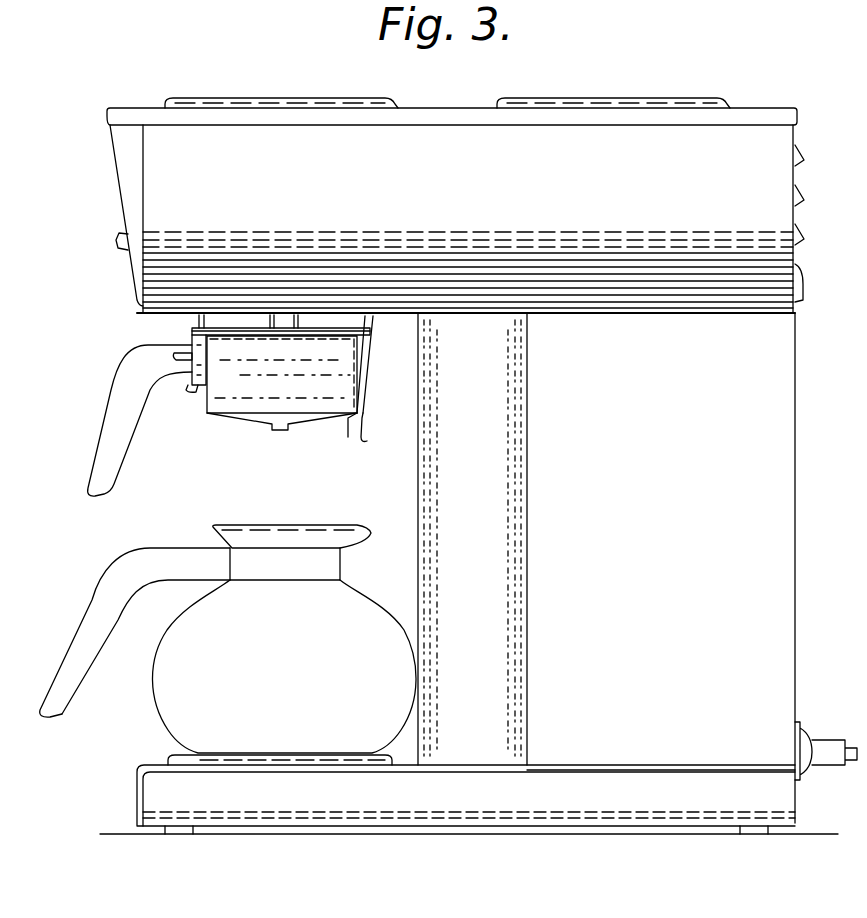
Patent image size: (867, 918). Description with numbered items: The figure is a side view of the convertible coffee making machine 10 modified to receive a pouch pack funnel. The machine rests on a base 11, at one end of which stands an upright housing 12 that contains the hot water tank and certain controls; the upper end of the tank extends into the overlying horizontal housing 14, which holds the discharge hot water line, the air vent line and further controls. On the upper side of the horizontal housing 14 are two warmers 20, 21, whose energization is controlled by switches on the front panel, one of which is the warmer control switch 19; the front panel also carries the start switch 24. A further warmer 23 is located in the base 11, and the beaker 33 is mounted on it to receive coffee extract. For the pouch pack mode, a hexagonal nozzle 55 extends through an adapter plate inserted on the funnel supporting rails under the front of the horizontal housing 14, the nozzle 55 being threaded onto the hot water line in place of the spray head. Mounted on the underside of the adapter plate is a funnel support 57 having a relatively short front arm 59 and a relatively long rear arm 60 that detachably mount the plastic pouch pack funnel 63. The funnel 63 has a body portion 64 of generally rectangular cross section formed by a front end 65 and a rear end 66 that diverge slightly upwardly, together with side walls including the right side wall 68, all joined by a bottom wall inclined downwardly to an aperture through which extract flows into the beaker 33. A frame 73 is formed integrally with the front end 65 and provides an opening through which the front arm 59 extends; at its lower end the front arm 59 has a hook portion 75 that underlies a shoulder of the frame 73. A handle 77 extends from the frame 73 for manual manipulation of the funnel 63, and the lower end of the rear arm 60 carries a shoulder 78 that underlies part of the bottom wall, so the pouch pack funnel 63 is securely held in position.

The convertible coffee making machine 10 is at (782, 78).
The base 11 is at (116, 803).
The upright housing 12 is at (816, 488).
The horizontal housing 14 is at (613, 206).
The warmer control switch 19 is at (118, 178).
The warmer 20 is at (318, 68).
The warmer 21 is at (590, 97).
The warmer 23 is at (172, 756).
The start switch 24 is at (116, 242).
The beaker 33 is at (380, 575).
The hexagonal nozzle 55 is at (292, 318).
The funnel support 57 is at (409, 344).
The front arm 59 is at (206, 324).
The rear arm 60 is at (372, 390).
The pouch pack funnel 63 is at (242, 436).
The body portion 64 is at (396, 373).
The front end 65 is at (207, 414).
The rear end 66 is at (364, 392).
The right side wall 68 is at (314, 383).
The frame 73 is at (190, 345).
The hook portion 75 is at (188, 388).
The handle 77 is at (108, 422).
The shoulder 78 is at (366, 436).